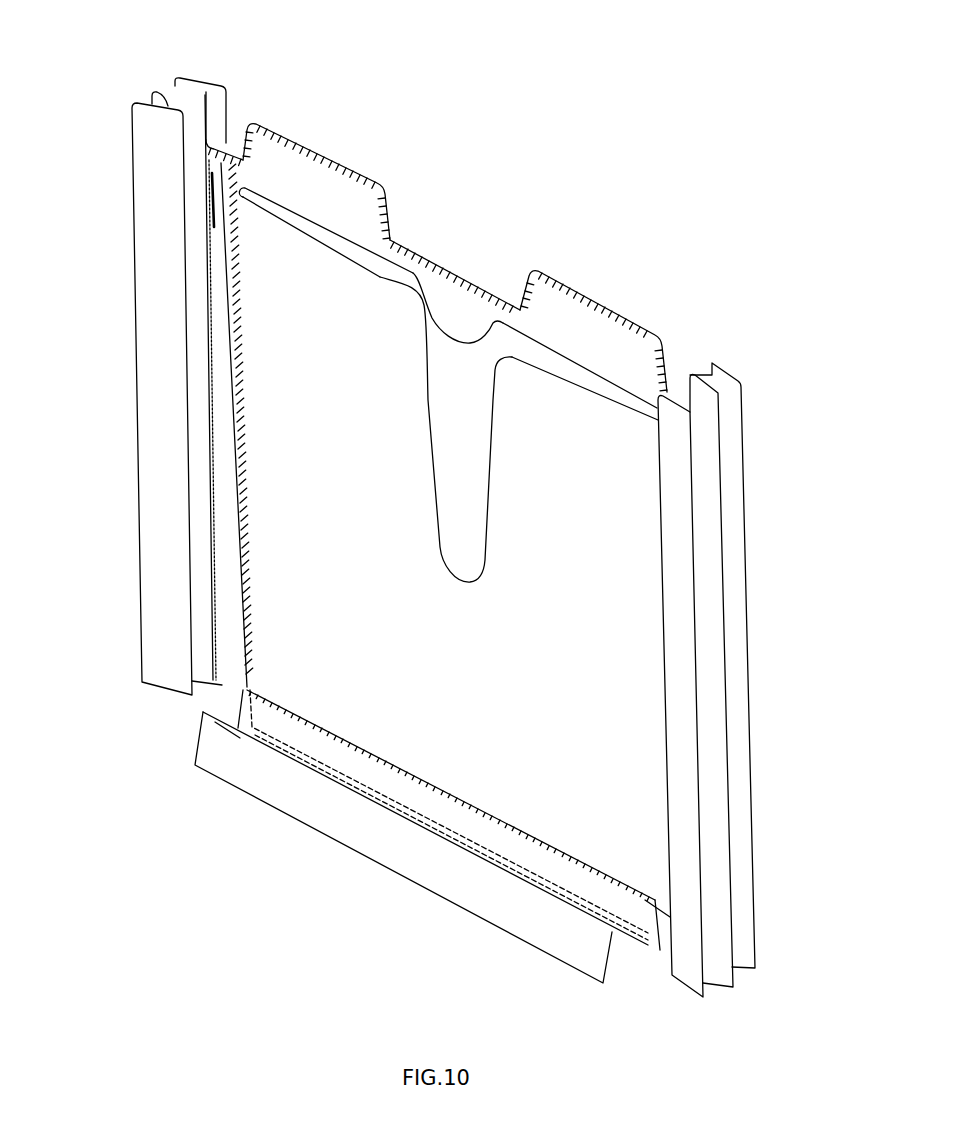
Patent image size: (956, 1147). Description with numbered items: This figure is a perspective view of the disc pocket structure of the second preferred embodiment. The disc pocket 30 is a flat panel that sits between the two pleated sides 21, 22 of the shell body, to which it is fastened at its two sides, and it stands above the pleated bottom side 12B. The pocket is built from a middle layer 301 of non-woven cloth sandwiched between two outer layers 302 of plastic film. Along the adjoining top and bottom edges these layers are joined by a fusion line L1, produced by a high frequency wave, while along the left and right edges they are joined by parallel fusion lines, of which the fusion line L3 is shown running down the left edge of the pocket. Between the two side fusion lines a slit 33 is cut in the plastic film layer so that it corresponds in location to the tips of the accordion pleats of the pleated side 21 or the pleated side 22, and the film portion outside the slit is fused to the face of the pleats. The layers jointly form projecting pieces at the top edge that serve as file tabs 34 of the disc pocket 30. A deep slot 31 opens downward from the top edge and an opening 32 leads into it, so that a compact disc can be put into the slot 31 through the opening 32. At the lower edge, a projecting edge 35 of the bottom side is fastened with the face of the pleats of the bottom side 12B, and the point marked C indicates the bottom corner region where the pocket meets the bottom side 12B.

The slit 33 is at (133, 323).
The pleated side 21 is at (213, 378).
The fusion line L3 is at (232, 415).
The disc pocket 30 is at (295, 520).
The file tab 34 is at (285, 165).
The outer layer 302 is at (331, 275).
The middle layer 301 is at (457, 355).
The fusion line L1 is at (492, 330).
The slot 31 is at (458, 530).
The opening 32 is at (598, 385).
The pleated side 22 is at (762, 643).
The bottom side 12B is at (383, 887).
The projecting edge 35 is at (247, 715).
The corner point C is at (657, 908).